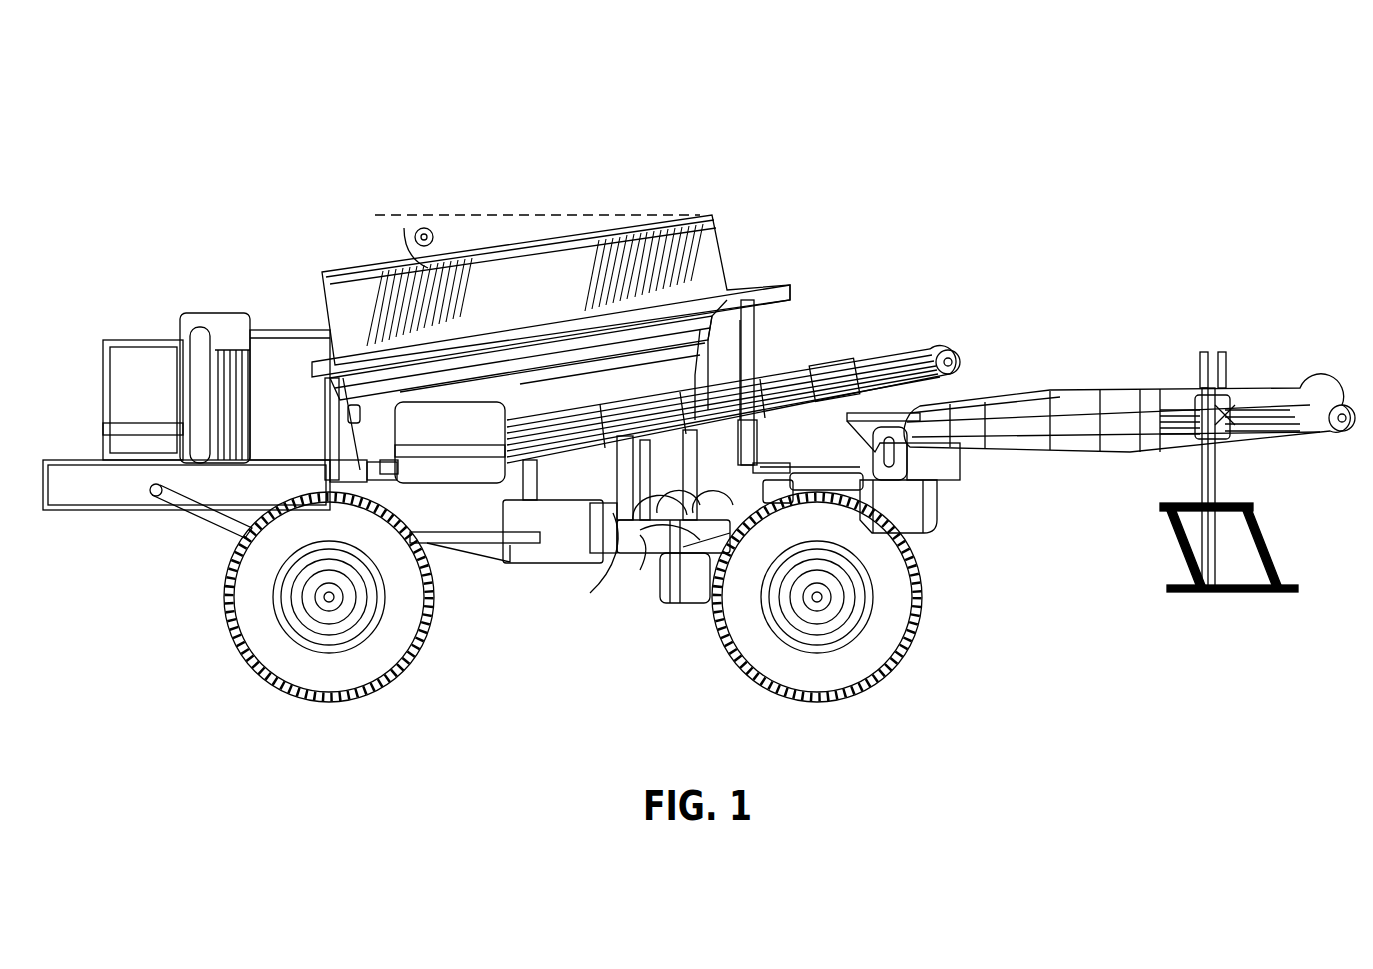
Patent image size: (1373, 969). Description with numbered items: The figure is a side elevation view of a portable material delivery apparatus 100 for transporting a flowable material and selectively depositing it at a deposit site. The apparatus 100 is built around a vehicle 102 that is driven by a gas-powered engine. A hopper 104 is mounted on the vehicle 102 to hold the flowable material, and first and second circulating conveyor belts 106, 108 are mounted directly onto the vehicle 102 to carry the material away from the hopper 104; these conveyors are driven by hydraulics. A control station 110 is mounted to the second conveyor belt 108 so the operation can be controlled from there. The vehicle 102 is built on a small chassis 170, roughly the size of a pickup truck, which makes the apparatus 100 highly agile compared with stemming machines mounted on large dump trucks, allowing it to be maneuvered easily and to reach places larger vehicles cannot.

The portable material delivery apparatus 100 is at (496, 139).
The vehicle 102 is at (114, 520).
The hopper 104 is at (357, 215).
The first circulating conveyor belt 106 is at (921, 322).
The second circulating conveyor belt 108 is at (1304, 382).
The control station 110 is at (1176, 600).
The chassis 170 is at (640, 575).